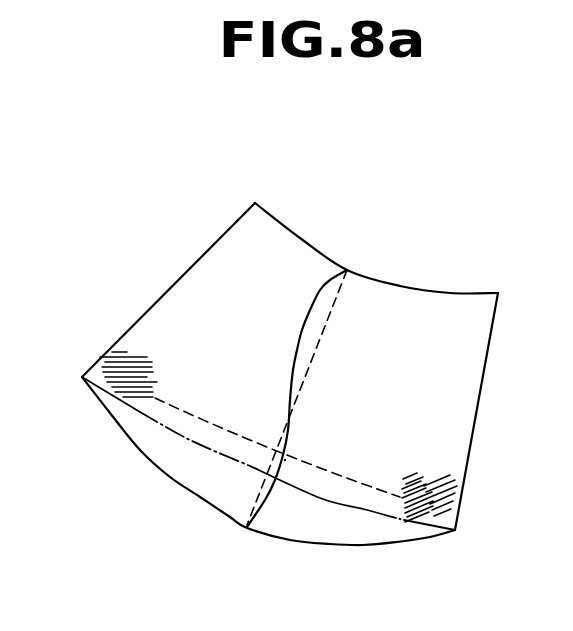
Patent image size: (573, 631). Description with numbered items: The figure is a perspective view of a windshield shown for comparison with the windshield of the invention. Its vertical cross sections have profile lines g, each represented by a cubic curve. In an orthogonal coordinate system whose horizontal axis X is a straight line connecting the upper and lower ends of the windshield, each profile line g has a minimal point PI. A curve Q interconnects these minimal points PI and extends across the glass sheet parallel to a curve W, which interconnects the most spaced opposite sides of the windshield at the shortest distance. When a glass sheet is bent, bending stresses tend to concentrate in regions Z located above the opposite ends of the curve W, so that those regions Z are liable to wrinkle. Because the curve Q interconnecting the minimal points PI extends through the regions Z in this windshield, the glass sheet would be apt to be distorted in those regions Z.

The regions liable to get wrinkled Z is at (127, 390).
The profile line g is at (302, 327).
The horizontal axis X is at (310, 357).
The minimal point PI is at (285, 460).
The curve interconnecting minimal points Q is at (180, 412).
The curve interconnecting most spaced opposite sides W is at (388, 517).